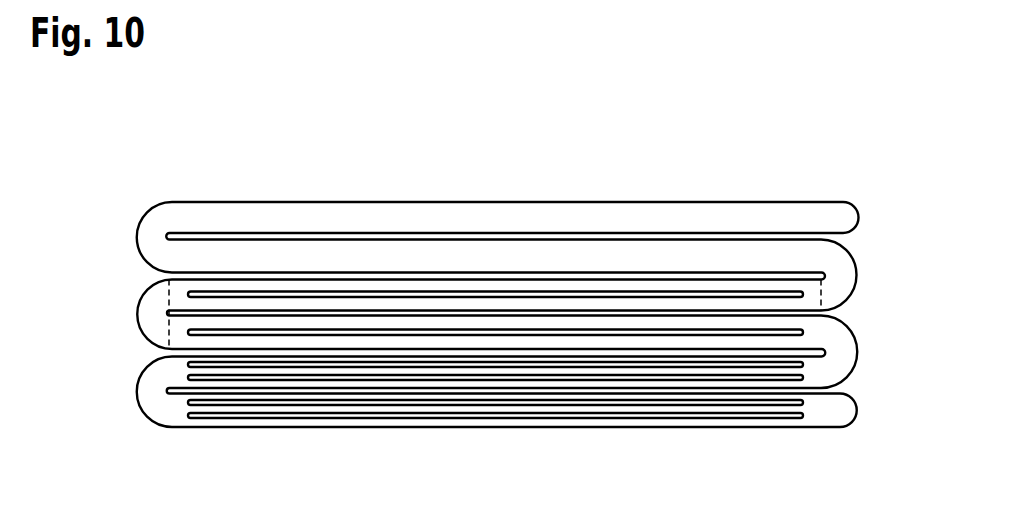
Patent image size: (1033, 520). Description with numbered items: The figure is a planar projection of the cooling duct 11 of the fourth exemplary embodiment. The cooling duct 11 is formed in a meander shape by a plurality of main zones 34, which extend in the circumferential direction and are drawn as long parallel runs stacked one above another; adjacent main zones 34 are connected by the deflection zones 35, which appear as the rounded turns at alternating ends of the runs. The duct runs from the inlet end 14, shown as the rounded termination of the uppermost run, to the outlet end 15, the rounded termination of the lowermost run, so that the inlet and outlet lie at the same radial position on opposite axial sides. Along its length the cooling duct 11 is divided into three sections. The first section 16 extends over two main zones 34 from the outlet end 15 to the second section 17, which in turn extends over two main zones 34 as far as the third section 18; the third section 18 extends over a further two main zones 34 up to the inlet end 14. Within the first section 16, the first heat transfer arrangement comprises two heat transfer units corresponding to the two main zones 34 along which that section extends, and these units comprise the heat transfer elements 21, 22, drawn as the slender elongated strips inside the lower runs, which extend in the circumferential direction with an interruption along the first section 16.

The cooling duct 11 is at (604, 140).
The inlet end 14 is at (855, 186).
The outlet end 15 is at (866, 427).
The first section 16 is at (866, 391).
The second section 17 is at (866, 319).
The third section 18 is at (866, 246).
The heat transfer element 21 is at (190, 366).
The heat transfer element 22 is at (803, 296).
The main zone 34 is at (194, 270).
The deflection zone 35 is at (140, 300).